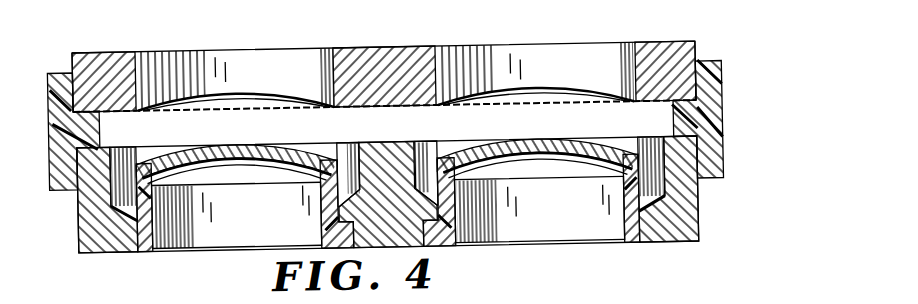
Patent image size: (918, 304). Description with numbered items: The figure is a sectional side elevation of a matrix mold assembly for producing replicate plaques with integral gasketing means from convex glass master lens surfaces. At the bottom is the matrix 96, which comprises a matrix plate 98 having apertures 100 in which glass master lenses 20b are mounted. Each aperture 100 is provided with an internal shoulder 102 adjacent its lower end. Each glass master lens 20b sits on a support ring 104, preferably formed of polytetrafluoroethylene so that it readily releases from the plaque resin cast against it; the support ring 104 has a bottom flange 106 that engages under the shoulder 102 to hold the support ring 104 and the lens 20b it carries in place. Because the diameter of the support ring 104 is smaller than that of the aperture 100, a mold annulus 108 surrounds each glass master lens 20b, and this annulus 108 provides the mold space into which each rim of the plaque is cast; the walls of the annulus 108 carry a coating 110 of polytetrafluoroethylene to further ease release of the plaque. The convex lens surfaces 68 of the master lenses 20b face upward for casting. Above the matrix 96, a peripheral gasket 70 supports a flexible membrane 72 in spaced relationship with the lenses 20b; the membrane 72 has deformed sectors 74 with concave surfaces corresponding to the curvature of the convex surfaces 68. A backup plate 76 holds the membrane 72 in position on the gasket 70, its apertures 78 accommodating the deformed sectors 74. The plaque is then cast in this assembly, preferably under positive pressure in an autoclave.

The glass master lens 20b is at (232, 163).
The convex lens surface 68 is at (175, 158).
The peripheral gasket 70 is at (707, 112).
The flexible membrane 72 is at (89, 105).
The deformed sector 74 is at (253, 95).
The backup plate 76 is at (650, 79).
The aperture of backup plate 78 is at (328, 75).
The matrix 96 is at (697, 224).
The matrix plate 98 is at (90, 230).
The aperture of matrix plate 100 is at (121, 168).
The internal shoulder 102 is at (119, 226).
The support ring 104 is at (327, 208).
The bottom flange 106 is at (138, 246).
The mold annulus 108 is at (122, 191).
The coating 110 is at (355, 172).